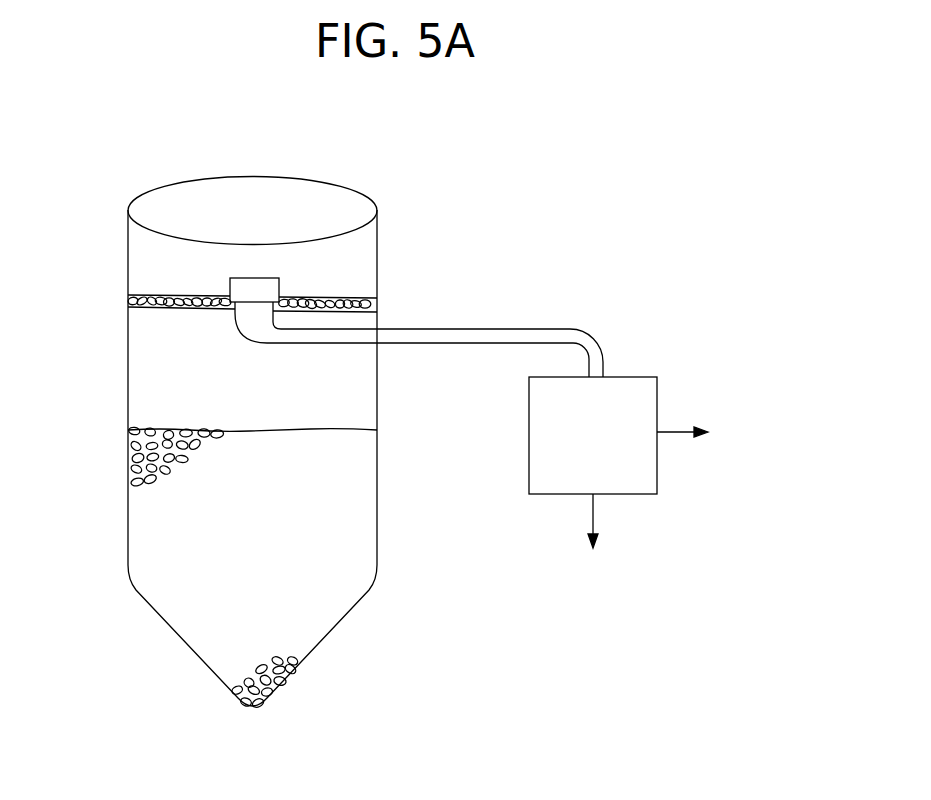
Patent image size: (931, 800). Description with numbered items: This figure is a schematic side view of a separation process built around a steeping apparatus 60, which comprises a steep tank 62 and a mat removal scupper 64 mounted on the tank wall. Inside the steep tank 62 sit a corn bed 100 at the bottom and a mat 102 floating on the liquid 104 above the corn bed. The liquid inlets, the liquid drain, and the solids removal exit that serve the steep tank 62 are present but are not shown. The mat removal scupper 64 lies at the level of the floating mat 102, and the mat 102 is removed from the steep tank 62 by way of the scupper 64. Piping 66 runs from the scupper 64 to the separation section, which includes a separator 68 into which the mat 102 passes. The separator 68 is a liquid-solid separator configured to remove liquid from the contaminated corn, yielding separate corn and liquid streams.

The steeping apparatus 60 is at (424, 411).
The steep tank 62 is at (128, 390).
The mat removal scupper 64 is at (260, 278).
The piping 66 is at (435, 328).
The separator 68 is at (635, 377).
The corn bed 100 is at (272, 517).
The mat 102 is at (145, 286).
The liquid 104 is at (275, 397).